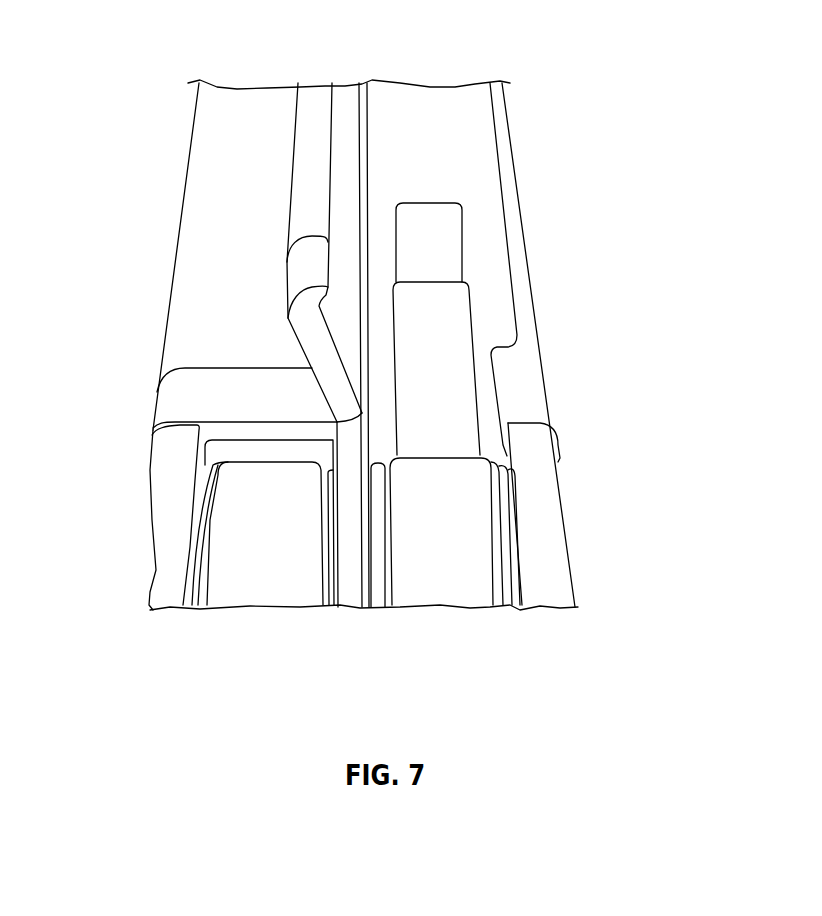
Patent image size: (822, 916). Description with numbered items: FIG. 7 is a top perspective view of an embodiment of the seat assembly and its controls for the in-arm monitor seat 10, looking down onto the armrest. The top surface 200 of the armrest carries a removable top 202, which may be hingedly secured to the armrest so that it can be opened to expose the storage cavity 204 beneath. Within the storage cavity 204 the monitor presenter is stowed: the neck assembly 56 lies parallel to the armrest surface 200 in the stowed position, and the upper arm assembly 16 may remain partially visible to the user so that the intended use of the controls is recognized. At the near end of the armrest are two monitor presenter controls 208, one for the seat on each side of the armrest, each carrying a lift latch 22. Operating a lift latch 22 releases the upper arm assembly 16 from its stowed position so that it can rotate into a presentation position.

The in-arm monitor seat 10 is at (113, 73).
The top surface of armrest 200 is at (216, 265).
The removable top 202 is at (320, 333).
The storage cavity 204 is at (462, 150).
The upper arm assembly 16 is at (443, 235).
The neck assembly 56 is at (440, 353).
The lift latch 22 is at (238, 517).
The monitor presenter control 208 is at (158, 526).